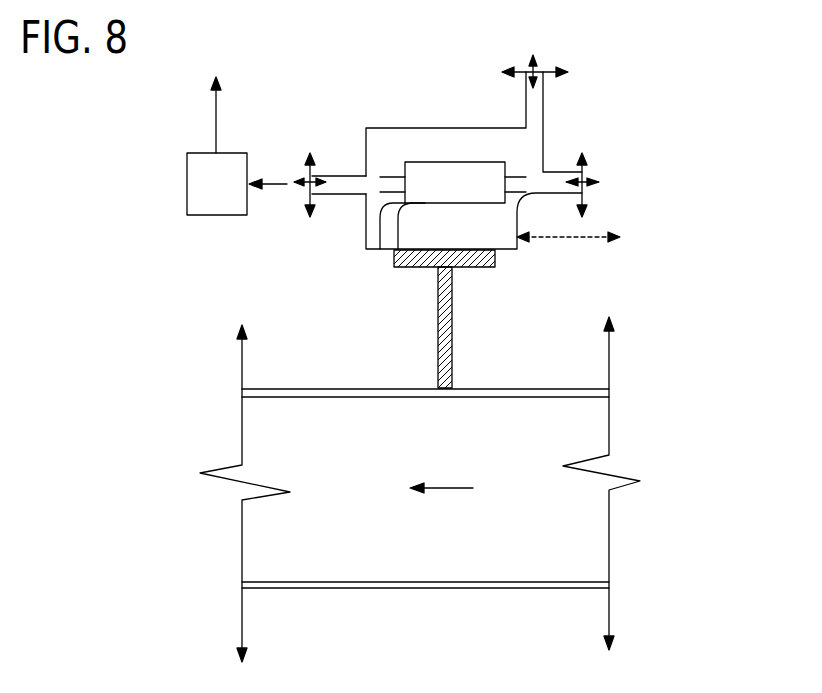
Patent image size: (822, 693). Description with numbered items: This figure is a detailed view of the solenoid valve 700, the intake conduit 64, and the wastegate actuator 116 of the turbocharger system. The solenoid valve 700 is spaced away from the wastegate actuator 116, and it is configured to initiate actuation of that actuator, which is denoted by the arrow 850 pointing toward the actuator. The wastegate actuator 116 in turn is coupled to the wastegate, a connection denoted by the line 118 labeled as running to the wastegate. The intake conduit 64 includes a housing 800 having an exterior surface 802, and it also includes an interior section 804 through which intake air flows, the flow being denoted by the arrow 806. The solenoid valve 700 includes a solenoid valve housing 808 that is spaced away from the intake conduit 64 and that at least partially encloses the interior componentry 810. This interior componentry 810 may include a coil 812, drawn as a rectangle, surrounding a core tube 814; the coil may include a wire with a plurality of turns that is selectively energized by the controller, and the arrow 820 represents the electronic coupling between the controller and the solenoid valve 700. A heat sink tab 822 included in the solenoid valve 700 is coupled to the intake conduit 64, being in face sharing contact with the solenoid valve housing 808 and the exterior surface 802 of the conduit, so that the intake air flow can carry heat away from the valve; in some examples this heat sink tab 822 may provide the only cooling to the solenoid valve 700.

The intake conduit 64 is at (420, 482).
The wastegate actuator 116 is at (235, 197).
The line 118 is at (216, 130).
The solenoid valve 700 is at (541, 221).
The housing 800 is at (335, 374).
The exterior surface 802 is at (353, 389).
The interior section 804 is at (363, 460).
The arrow 806 is at (443, 488).
The solenoid valve housing 808 is at (408, 127).
The interior componentry 810 is at (391, 162).
The coil 812 is at (415, 162).
The core tube 814 is at (516, 177).
The arrow 820 is at (535, 239).
The heat sink tab 822 is at (452, 305).
The arrow 850 is at (272, 183).